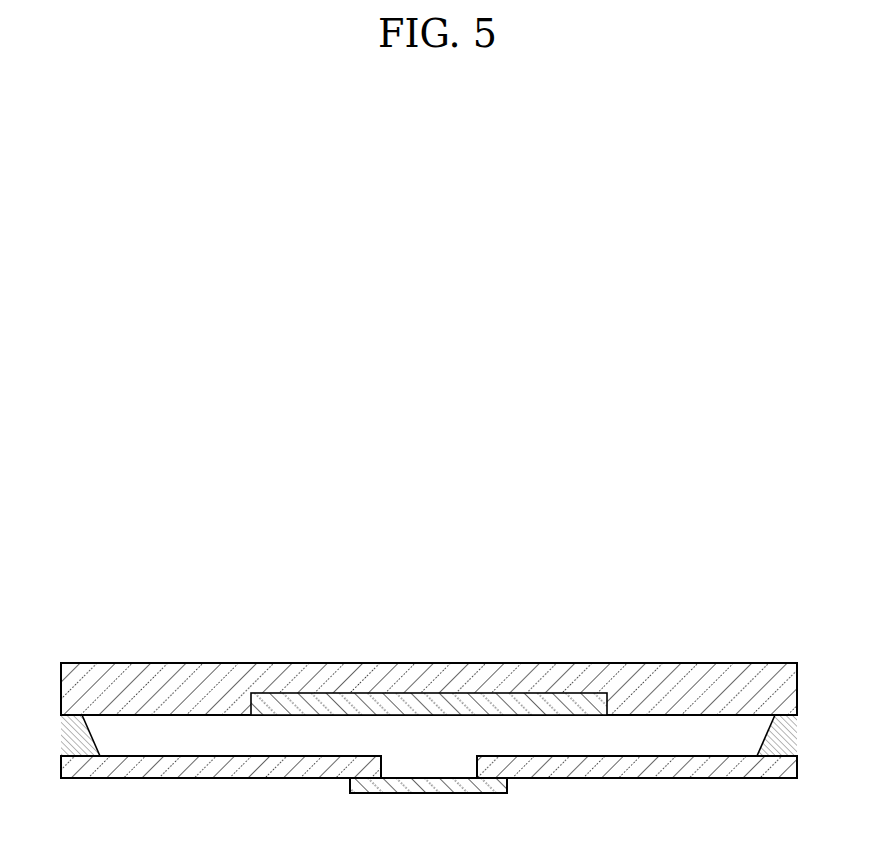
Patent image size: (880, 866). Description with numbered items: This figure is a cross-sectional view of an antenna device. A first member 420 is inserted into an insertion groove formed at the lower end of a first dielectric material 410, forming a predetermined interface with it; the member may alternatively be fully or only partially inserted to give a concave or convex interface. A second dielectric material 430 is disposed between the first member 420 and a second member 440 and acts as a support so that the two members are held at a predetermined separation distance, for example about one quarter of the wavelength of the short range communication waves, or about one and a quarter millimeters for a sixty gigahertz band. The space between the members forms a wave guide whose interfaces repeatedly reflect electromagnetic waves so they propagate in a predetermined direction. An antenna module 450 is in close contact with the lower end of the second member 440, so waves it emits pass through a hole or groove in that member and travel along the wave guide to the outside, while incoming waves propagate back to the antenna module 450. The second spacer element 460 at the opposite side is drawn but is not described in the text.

The first dielectric material 410 is at (781, 688).
The first member 420 is at (251, 696).
The second dielectric material 430 is at (782, 730).
The second member 440 is at (787, 762).
The antenna module 450 is at (430, 793).
The left side sealing member 460 is at (120, 740).